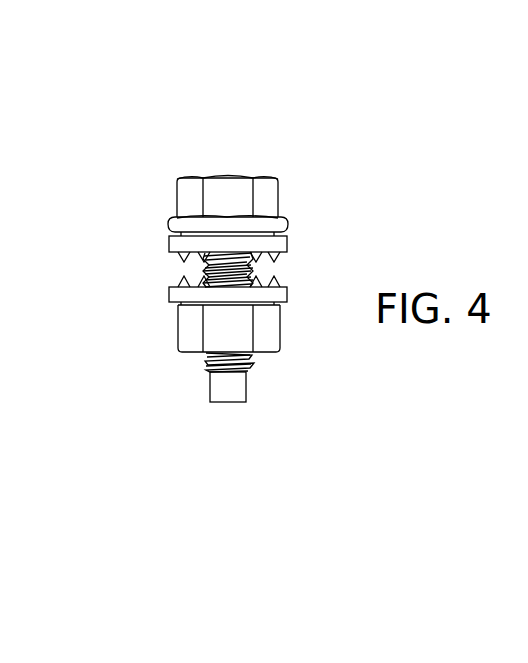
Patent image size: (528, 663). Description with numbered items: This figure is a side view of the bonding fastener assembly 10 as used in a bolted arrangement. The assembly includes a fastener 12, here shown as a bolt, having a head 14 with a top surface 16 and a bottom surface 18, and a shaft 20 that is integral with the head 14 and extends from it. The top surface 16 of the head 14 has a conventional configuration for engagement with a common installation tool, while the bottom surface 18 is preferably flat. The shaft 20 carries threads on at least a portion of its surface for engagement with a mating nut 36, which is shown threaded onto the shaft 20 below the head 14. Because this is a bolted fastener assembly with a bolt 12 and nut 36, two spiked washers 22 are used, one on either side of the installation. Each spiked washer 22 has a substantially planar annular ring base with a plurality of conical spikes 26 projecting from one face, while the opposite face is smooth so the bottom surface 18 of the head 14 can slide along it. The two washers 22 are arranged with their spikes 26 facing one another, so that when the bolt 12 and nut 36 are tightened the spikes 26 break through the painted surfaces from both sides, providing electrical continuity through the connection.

The bonding fastener assembly 10 is at (382, 143).
The fastener 12 is at (253, 166).
The head 14 is at (188, 198).
The top surface 16 is at (223, 193).
The bottom surface 18 is at (170, 248).
The shaft 20 is at (227, 390).
The spiked washer 22 is at (287, 242).
The spikes 26 is at (276, 256).
The nut 36 is at (188, 327).